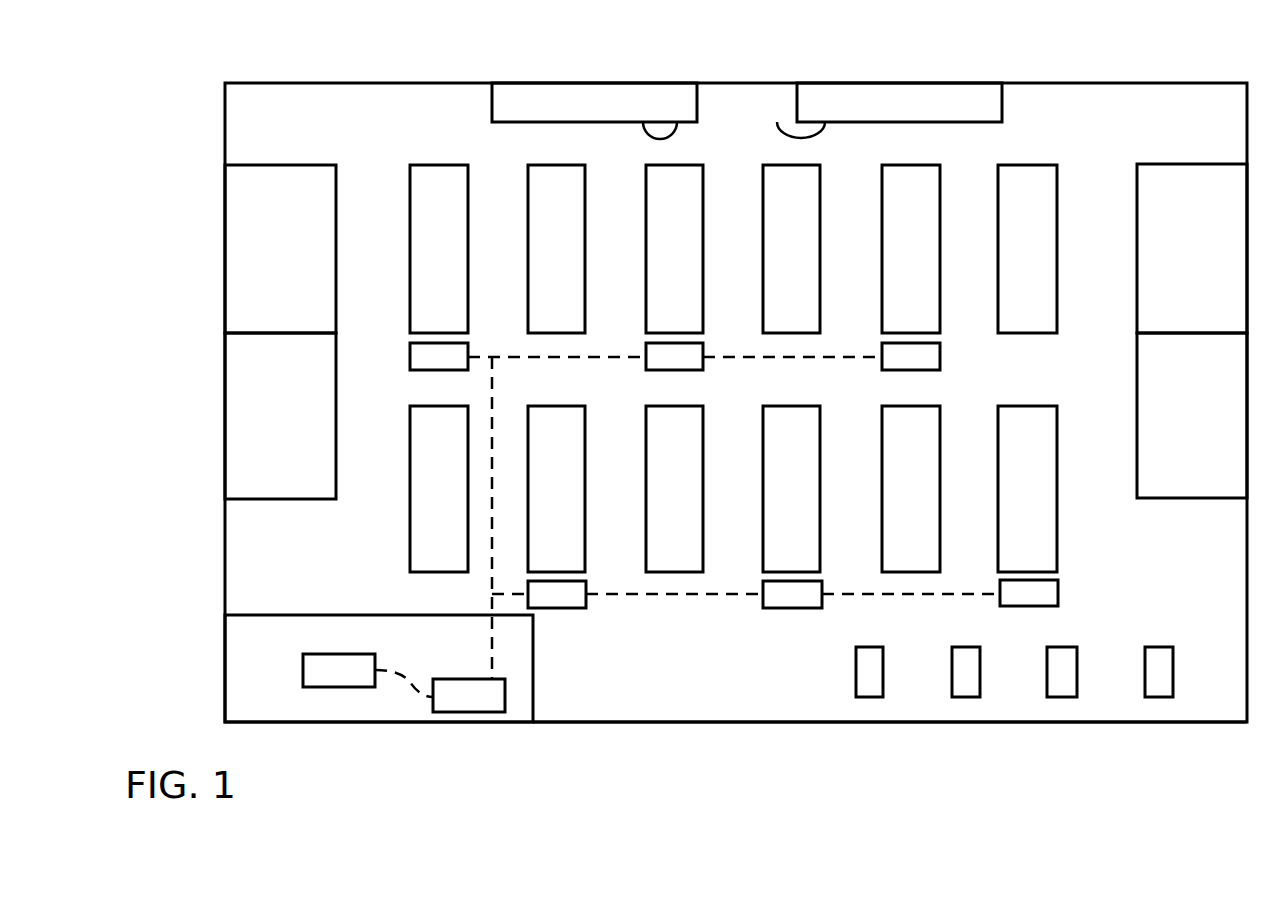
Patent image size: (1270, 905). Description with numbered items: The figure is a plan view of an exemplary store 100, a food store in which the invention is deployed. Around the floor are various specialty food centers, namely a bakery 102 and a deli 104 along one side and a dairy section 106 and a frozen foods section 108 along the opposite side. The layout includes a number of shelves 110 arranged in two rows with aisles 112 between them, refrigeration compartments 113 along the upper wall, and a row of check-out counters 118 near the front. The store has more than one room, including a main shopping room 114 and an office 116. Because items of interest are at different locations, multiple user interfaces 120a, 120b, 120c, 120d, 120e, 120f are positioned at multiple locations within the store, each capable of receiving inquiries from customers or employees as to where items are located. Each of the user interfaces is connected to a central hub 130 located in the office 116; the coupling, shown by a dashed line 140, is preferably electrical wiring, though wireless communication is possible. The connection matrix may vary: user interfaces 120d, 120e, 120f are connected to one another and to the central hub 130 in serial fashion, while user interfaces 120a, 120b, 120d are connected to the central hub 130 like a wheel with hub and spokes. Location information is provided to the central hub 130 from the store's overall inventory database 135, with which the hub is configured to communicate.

The store 100 is at (1160, 738).
The bakery 102 is at (238, 165).
The deli 104 is at (338, 415).
The dairy section 106 is at (1190, 164).
The frozen foods section 108 is at (1190, 498).
The shelves 110 is at (438, 165).
The aisles 112 is at (493, 190).
The refrigeration compartments 113 is at (677, 122).
The main shopping room 114 is at (722, 706).
The office 116 is at (245, 683).
The check-out counters 118 is at (968, 697).
The user interface 120a is at (410, 357).
The user interface 120b is at (675, 370).
The user interface 120c is at (912, 370).
The user interface 120d is at (586, 592).
The user interface 120e is at (790, 608).
The user interface 120f is at (1058, 587).
The central hub 130 is at (480, 698).
The inventory database 135 is at (338, 687).
The dashed line 140 is at (593, 357).